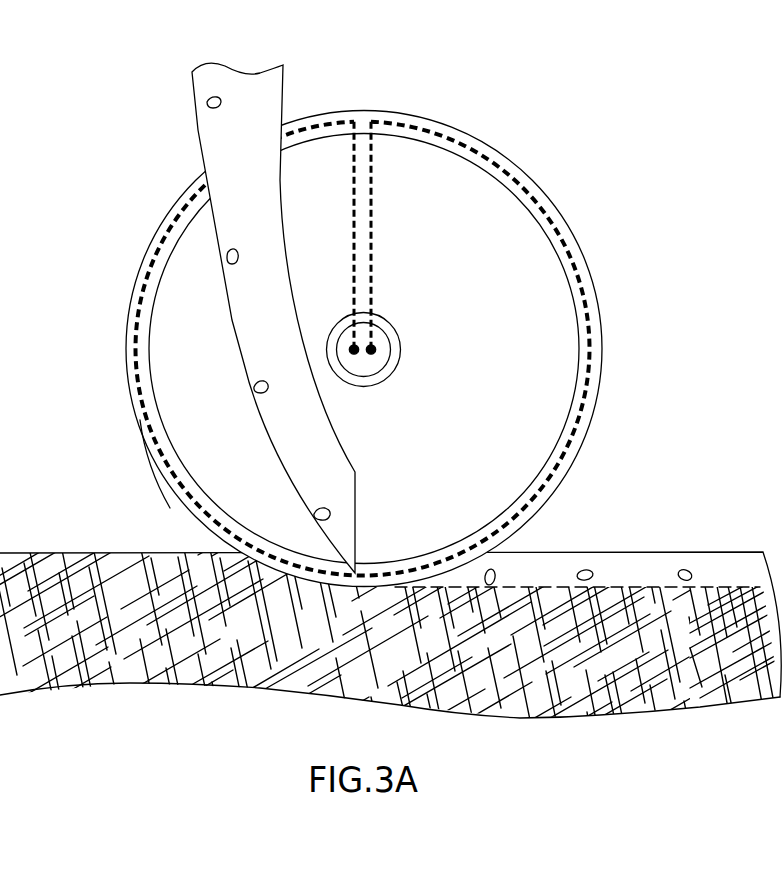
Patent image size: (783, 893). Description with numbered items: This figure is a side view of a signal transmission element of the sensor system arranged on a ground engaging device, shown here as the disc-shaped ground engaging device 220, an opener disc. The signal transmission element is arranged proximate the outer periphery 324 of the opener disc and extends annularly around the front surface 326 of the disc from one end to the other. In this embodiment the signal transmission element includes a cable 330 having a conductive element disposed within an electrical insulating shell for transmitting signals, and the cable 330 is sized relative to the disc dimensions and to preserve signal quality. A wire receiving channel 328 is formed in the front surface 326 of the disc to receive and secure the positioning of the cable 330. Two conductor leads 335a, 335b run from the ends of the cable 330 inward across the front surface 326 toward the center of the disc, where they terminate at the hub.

The disc opener 220 is at (363, 328).
The outer periphery 324 is at (583, 447).
The front surface 326 is at (432, 197).
The wire receiving channel 328 is at (168, 480).
The cable 330 is at (166, 232).
The first wire 335a is at (352, 252).
The second wire 335b is at (373, 208).